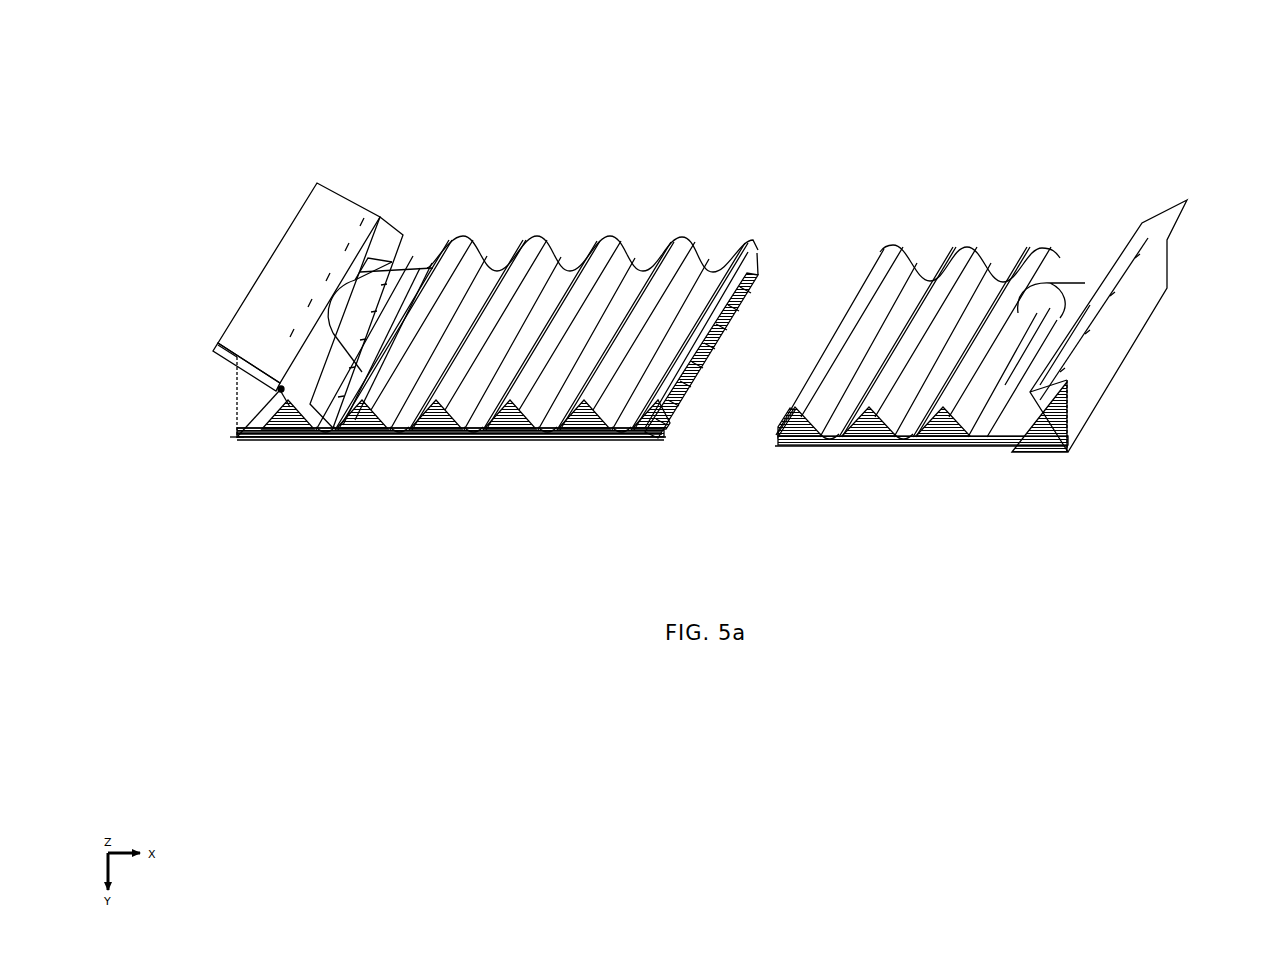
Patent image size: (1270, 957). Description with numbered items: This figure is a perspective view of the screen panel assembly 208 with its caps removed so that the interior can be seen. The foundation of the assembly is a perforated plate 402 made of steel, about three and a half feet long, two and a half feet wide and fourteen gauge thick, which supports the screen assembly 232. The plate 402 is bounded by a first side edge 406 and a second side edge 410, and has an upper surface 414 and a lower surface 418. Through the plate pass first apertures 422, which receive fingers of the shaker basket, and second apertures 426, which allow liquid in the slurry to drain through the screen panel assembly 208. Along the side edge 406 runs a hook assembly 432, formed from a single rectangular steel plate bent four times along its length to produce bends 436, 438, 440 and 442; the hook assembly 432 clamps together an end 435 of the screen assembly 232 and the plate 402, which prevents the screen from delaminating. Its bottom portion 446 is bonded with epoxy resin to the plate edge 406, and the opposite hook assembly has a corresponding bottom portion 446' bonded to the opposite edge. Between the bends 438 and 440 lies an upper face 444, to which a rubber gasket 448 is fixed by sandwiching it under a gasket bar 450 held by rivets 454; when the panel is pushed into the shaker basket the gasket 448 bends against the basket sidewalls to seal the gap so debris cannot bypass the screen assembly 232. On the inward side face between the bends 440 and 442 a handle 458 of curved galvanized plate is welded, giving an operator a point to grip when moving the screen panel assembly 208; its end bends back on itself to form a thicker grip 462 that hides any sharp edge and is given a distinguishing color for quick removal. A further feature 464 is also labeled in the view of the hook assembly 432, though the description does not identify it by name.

The screen panel assembly 208 is at (832, 156).
The screen assembly 232 is at (547, 250).
The perforated plate 402 is at (294, 440).
The side edge 406 is at (246, 437).
The side edge 410 is at (643, 446).
The upper surface 414 is at (508, 444).
The lower surface 418 is at (490, 446).
The first apertures 422 is at (283, 438).
The second apertures 426 is at (372, 432).
The hook assembly 432 is at (236, 410).
The end of screen assembly 435 is at (320, 440).
The bend 436 is at (234, 437).
The bend 438 is at (270, 388).
The bend 440 is at (280, 393).
The bend 442 is at (408, 268).
The upper face 444 is at (300, 340).
The bottom portion 446 is at (232, 492).
The bottom portion 446' is at (1035, 481).
The gasket 448 is at (330, 186).
The gasket bar 450 is at (368, 205).
The rivets 454 is at (397, 252).
The handle 458 is at (383, 252).
The thicker grip 462 is at (405, 265).
The slot 464 is at (397, 252).